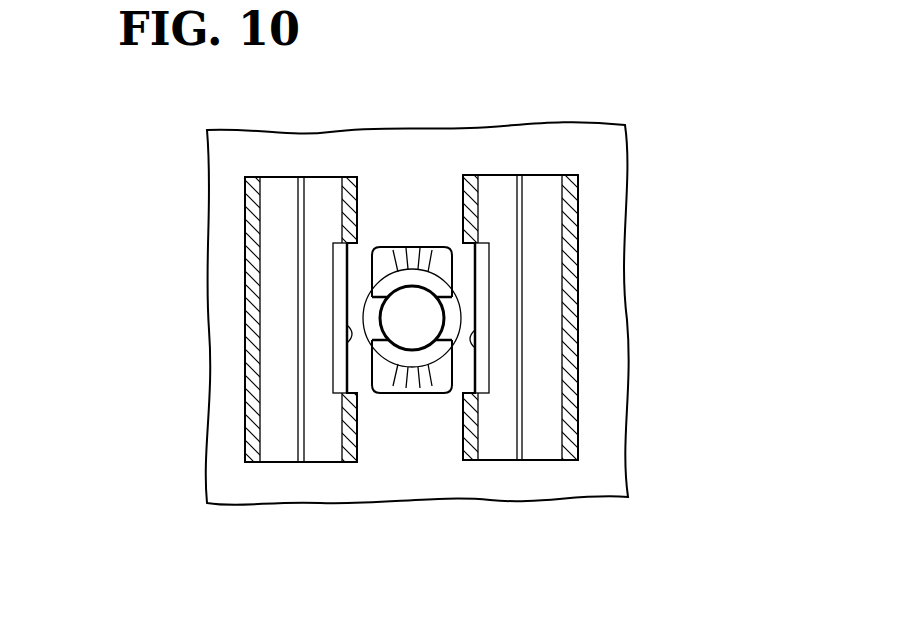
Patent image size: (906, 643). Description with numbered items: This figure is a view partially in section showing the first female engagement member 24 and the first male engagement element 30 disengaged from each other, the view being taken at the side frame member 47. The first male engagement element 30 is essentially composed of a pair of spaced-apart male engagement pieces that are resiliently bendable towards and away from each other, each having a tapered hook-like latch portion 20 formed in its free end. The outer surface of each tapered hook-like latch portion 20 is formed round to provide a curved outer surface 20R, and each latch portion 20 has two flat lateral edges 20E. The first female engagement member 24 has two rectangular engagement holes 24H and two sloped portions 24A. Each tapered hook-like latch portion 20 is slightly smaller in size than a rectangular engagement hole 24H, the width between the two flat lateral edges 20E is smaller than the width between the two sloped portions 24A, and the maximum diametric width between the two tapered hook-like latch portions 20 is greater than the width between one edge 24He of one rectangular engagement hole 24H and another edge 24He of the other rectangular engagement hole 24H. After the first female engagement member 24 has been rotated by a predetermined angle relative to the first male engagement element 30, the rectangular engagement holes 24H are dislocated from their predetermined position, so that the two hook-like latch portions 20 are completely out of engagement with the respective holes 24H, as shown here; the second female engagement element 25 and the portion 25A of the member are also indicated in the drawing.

The side frame member 47 is at (271, 138).
The first female engagement member 24 is at (504, 158).
The second female engagement element 25 is at (243, 437).
The outer wall portion 25A is at (290, 440).
The sloped portion 24A is at (325, 440).
The rectangular engagement hole 24H is at (340, 307).
The edge of rectangular engagement hole 24He is at (350, 346).
The tapered hook-like latch portion 20 is at (419, 321).
The flat lateral edge 20E is at (372, 283).
The curved outer surface 20R is at (393, 255).
The first male engagement element 30 is at (411, 207).